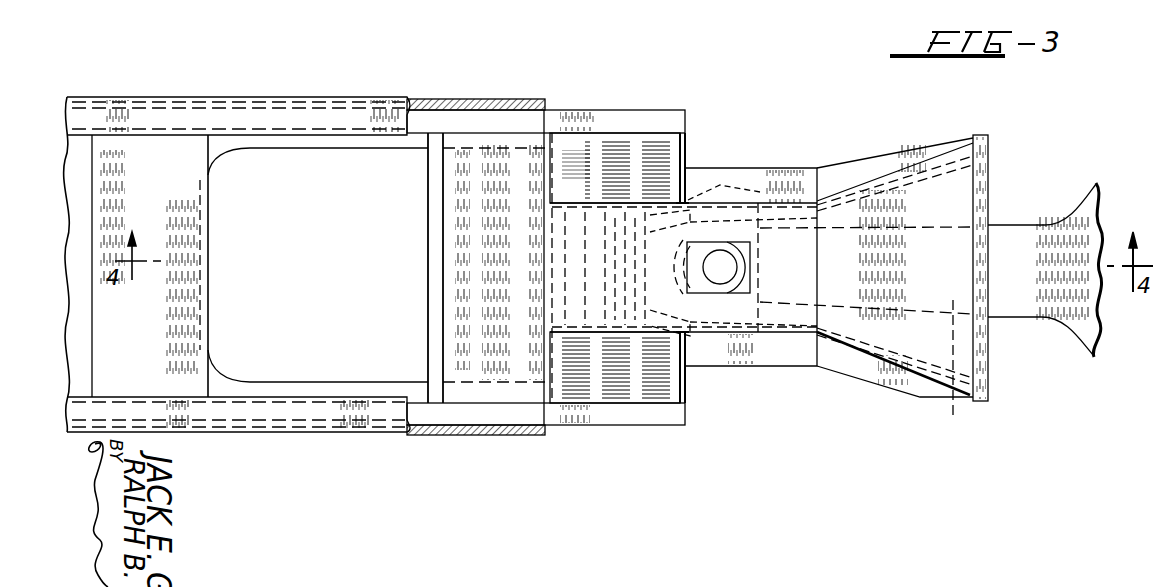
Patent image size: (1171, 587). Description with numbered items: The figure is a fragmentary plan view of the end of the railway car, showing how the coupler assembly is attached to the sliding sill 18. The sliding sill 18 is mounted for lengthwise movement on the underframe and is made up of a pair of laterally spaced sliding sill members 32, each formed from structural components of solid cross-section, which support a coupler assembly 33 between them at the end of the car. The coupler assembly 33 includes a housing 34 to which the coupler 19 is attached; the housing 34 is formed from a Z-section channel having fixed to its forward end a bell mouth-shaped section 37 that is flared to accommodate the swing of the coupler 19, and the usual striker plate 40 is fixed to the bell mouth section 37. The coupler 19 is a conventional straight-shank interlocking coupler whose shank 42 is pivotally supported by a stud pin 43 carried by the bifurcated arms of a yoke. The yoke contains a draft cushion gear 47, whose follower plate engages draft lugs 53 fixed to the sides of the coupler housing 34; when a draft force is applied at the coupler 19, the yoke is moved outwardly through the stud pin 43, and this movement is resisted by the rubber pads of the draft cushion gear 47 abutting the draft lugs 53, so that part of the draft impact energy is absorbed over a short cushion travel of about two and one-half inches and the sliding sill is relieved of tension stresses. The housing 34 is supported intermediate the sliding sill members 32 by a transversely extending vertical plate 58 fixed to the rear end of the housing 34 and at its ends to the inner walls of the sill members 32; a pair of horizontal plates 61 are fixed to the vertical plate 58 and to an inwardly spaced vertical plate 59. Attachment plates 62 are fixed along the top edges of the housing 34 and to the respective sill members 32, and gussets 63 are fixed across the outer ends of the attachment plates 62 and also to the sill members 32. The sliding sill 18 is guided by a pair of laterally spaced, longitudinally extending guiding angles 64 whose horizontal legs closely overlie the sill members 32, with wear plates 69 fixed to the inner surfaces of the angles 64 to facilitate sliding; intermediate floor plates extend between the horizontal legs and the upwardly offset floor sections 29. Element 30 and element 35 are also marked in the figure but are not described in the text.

The sliding sill 18 is at (660, 111).
The coupler 19 is at (1020, 238).
The floor sections 29 is at (232, 386).
The piston 30 is at (315, 366).
The sliding sill members 32 is at (563, 120).
The coupler assembly 33 is at (744, 189).
The housing 34 is at (728, 334).
The passage 35 is at (764, 332).
The bell mouth-shaped section 37 is at (917, 368).
The striker plate 40 is at (990, 172).
The shank 42 is at (942, 369).
The stud pin 43 is at (730, 267).
The draft cushion gear 47 is at (580, 254).
The draft lugs 53 is at (690, 198).
The vertical plate 58 is at (550, 290).
The vertical plate 59 is at (428, 329).
The horizontal plates 61 is at (485, 150).
The attachment plates 62 is at (600, 146).
The gussets 63 is at (688, 160).
The guiding angles 64 is at (351, 112).
The wear plates 69 is at (524, 106).